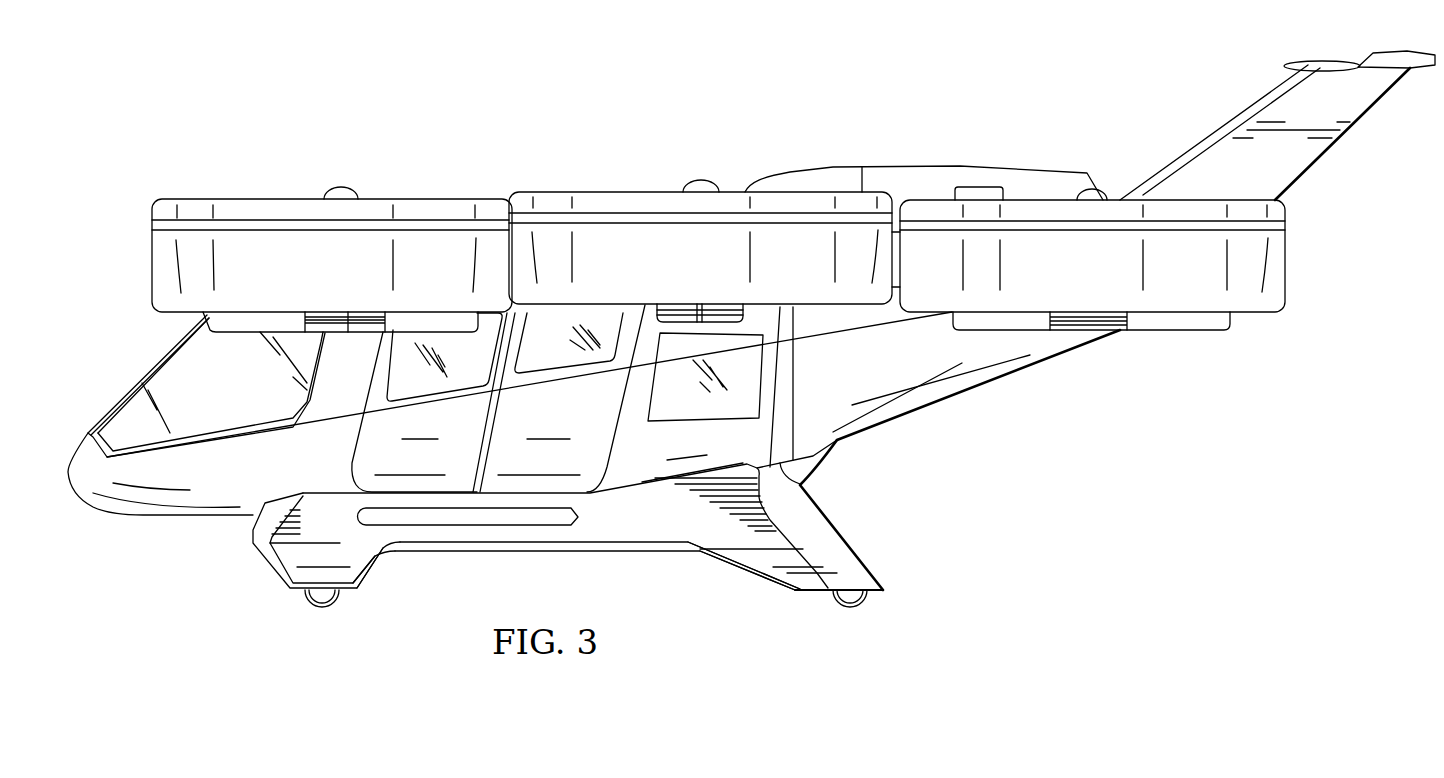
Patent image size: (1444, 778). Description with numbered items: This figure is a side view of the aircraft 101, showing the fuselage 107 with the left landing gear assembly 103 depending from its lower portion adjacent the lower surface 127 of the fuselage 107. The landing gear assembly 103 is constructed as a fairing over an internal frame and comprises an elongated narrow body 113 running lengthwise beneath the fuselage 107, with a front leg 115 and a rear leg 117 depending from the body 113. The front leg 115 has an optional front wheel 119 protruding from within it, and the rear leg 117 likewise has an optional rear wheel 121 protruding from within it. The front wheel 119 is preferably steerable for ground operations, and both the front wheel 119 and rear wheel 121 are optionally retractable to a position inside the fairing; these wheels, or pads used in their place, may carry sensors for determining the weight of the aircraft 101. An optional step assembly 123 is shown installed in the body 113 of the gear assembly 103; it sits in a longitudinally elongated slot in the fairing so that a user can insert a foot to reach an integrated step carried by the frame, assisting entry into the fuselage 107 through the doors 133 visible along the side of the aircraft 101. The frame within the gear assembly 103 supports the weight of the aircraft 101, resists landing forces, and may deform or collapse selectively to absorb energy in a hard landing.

The aircraft 101 is at (822, 101).
The left landing gear assembly 103 is at (268, 568).
The aircraft fuselage 107 is at (163, 518).
The elongated narrow body 113 is at (626, 553).
The front leg 115 is at (380, 569).
The rear leg 117 is at (744, 573).
The front wheel 119 is at (318, 608).
The rear wheel 121 is at (853, 608).
The step assembly 123 is at (583, 521).
The lower surface of fuselage 127 is at (808, 483).
The doors 133 is at (372, 449).